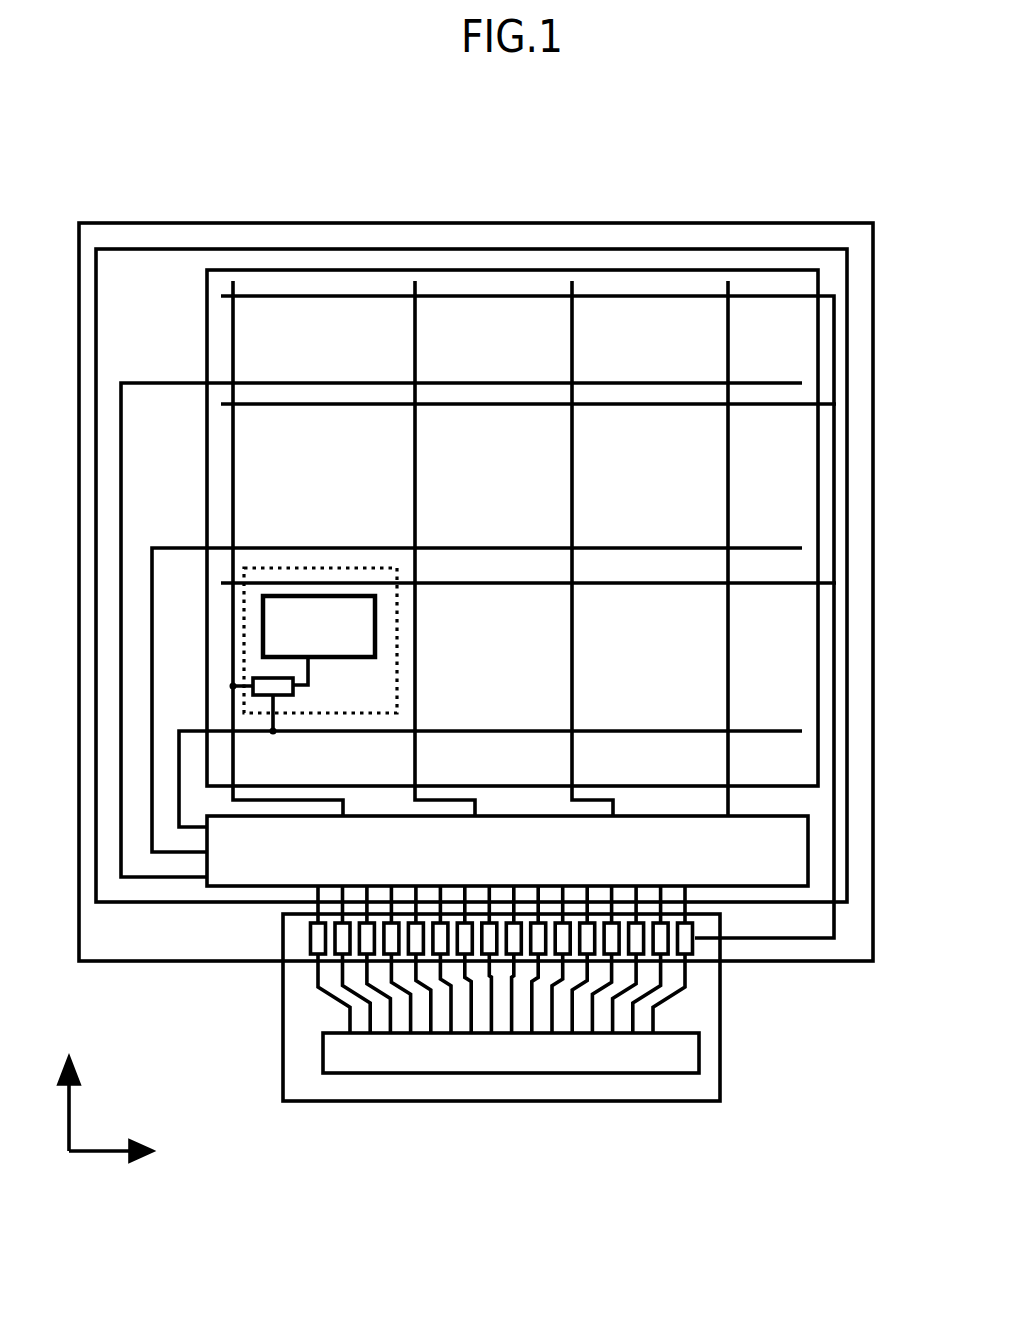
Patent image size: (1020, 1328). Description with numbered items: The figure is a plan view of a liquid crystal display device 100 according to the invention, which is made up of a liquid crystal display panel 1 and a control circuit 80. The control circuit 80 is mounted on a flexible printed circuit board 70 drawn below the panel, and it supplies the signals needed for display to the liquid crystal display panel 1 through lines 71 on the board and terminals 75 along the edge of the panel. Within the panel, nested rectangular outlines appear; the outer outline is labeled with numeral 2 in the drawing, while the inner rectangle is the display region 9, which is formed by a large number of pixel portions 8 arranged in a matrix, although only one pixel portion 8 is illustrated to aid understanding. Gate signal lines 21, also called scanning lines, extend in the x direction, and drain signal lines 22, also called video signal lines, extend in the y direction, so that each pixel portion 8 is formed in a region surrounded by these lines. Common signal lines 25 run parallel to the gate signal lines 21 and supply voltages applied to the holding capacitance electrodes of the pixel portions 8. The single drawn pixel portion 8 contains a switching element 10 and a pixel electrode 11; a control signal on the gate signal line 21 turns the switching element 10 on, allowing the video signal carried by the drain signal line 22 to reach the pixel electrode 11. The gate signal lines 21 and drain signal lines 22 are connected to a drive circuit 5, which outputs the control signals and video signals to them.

The liquid crystal display panel 1 is at (489, 217).
The element substrate 2 is at (297, 231).
The drive circuit 5 is at (785, 845).
The pixel portion 8 is at (398, 622).
The display region 9 is at (678, 278).
The switching element 10 is at (294, 692).
The pixel electrode 11 is at (288, 596).
The gate signal line 21 is at (476, 547).
The drain signal line 22 is at (235, 437).
The common signal line 25 is at (630, 580).
The flexible printed circuit board 70 is at (700, 1013).
The line 71 is at (335, 1008).
The terminal 75 is at (310, 943).
The control circuit 80 is at (680, 1060).
The liquid crystal display device 100 is at (157, 962).